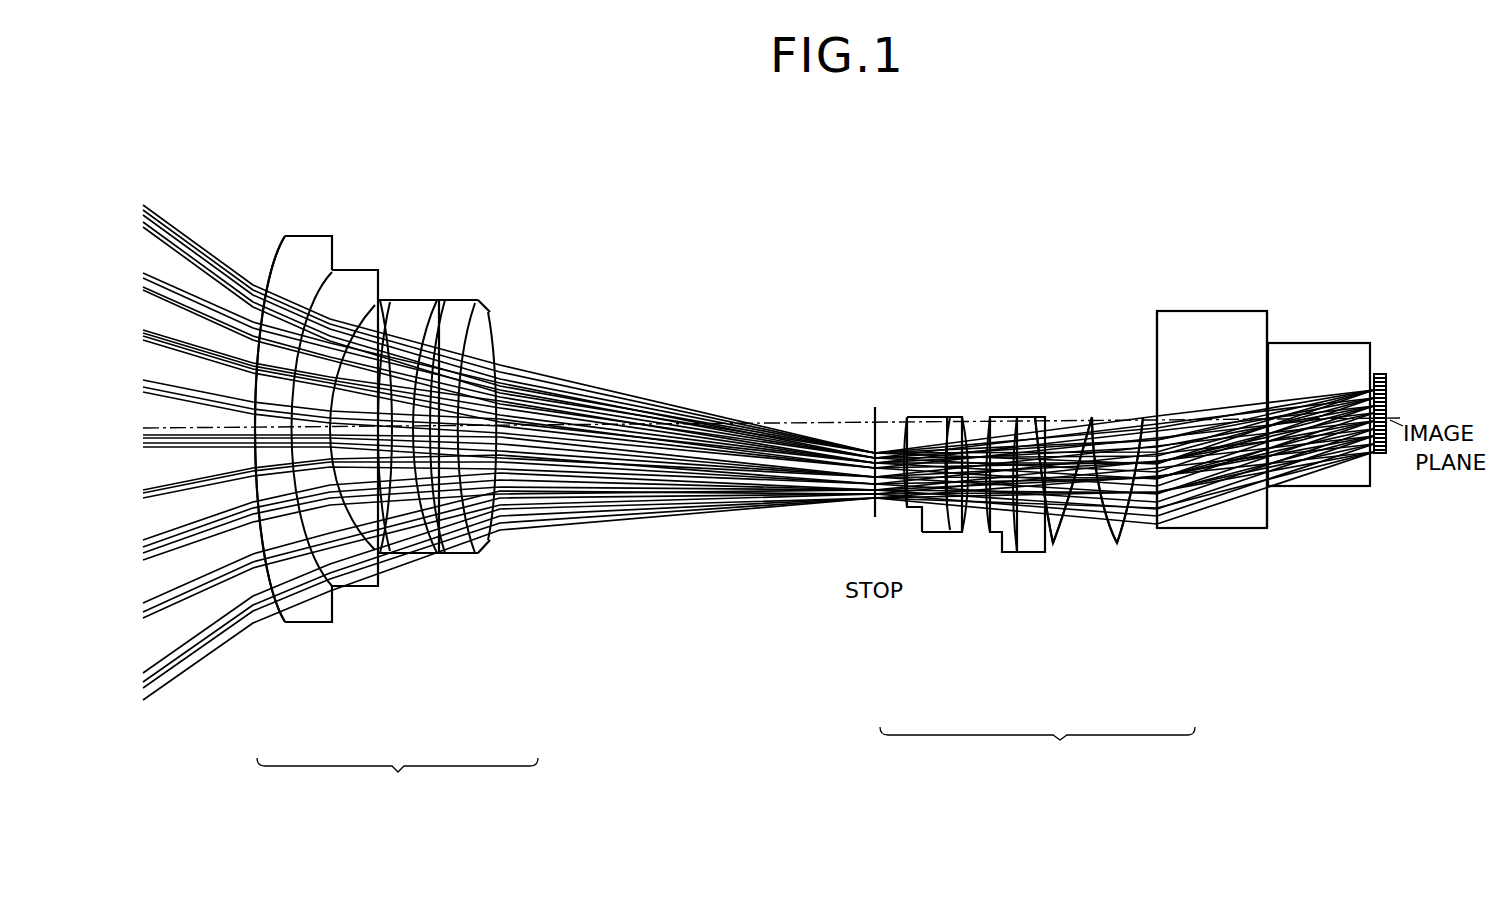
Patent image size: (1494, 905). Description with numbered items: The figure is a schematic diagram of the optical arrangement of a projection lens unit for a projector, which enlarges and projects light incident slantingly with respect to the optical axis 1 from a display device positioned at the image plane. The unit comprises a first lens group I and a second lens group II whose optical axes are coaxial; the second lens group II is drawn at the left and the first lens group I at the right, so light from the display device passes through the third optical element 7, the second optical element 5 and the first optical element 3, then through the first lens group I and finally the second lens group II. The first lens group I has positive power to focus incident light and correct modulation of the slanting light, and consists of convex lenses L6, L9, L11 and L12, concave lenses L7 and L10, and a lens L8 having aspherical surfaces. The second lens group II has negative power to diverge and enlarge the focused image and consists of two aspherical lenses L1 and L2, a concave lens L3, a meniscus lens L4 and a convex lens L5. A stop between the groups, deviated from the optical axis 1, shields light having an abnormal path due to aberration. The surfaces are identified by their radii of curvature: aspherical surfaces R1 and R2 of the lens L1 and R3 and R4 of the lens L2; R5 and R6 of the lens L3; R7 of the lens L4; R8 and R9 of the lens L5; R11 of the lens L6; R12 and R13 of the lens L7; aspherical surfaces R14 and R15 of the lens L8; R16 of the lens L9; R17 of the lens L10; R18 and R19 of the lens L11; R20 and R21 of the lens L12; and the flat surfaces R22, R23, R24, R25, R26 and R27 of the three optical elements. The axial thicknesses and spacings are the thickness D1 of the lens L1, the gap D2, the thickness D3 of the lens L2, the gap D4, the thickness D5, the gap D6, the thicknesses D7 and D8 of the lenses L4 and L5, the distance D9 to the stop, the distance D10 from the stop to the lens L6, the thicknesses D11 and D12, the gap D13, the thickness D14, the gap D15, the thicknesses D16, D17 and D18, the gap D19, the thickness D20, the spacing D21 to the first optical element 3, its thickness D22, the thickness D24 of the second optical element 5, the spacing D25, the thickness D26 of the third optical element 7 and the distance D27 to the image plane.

The optical axis 1 is at (780, 420).
The first optical element 3 is at (1235, 311).
The second optical element 5 is at (1289, 343).
The third optical element 7 is at (1386, 374).
The first lens group I is at (1037, 751).
The second lens group II is at (397, 781).
The aspherical lens L1 is at (300, 280).
The aspherical lens L2 is at (358, 285).
The concave lens L3 is at (405, 300).
The meniscus lens L4 is at (488, 300).
The convex lens L5 is at (520, 320).
The convex lens L6 is at (925, 440).
The concave lens L7 is at (955, 440).
The aspherical lens L8 is at (1015, 440).
The convex lens L9 is at (1058, 440).
The concave lens L10 is at (1105, 440).
The convex lens L11 is at (1165, 378).
The convex lens L12 is at (1185, 372).
The aspherical surface 1 R1 is at (265, 612).
The aspherical surface 2 R2 is at (300, 590).
The aspherical surface 3 R3 is at (330, 560).
The aspherical surface 4 R4 is at (360, 560).
The lens surface R5 is at (380, 556).
The lens surface R6 is at (418, 556).
The lens surface R7 is at (440, 556).
The lens surface R8 is at (470, 556).
The lens surface R9 is at (508, 545).
The lens surface R11 is at (907, 532).
The lens surface R12 is at (945, 532).
The lens surface R13 is at (962, 532).
The aspherical surface 5 R14 is at (970, 530).
The aspherical surface 6 R15 is at (990, 532).
The lens surface R16 is at (1002, 552).
The lens surface R17 is at (1040, 552).
The lens surface R18 is at (1053, 545).
The lens surface R19 is at (1090, 545).
The lens surface R20 is at (1117, 545).
The lens surface R21 is at (1157, 528).
The optical element surface R22 is at (1265, 528).
The optical element surface R23 is at (1268, 528).
The optical element surface R24 is at (1268, 490).
The optical element surface R25 is at (1374, 453).
The optical element surface R26 is at (1384, 453).
The optical element surface R27 is at (1382, 453).
The lens thickness D1 is at (250, 285).
The distance D2 is at (325, 280).
The lens thickness D3 is at (370, 300).
The distance D4 is at (428, 300).
The lens thickness D5 is at (450, 300).
The distance D6 is at (468, 300).
The lens thickness D7 is at (505, 300).
The lens thickness D8 is at (492, 333).
The distance D9 is at (805, 440).
The distance D10 is at (890, 440).
The lens thickness D11 is at (948, 435).
The lens thickness D12 is at (972, 435).
The distance D13 is at (988, 430).
The lens thickness D14 is at (1005, 435).
The distance D15 is at (1030, 435).
The lens thickness D16 is at (1085, 435).
The lens thickness D17 is at (1150, 430).
The lens thickness D18 is at (1112, 430).
The distance D19 is at (1200, 410).
The lens thickness D20 is at (1225, 415).
The distance D21 is at (1255, 420).
The optical element thickness D22 is at (1290, 400).
The optical element thickness D24 is at (1307, 407).
The distance D25 is at (1376, 374).
The optical element thickness D26 is at (1388, 378).
The distance D27 is at (1388, 400).